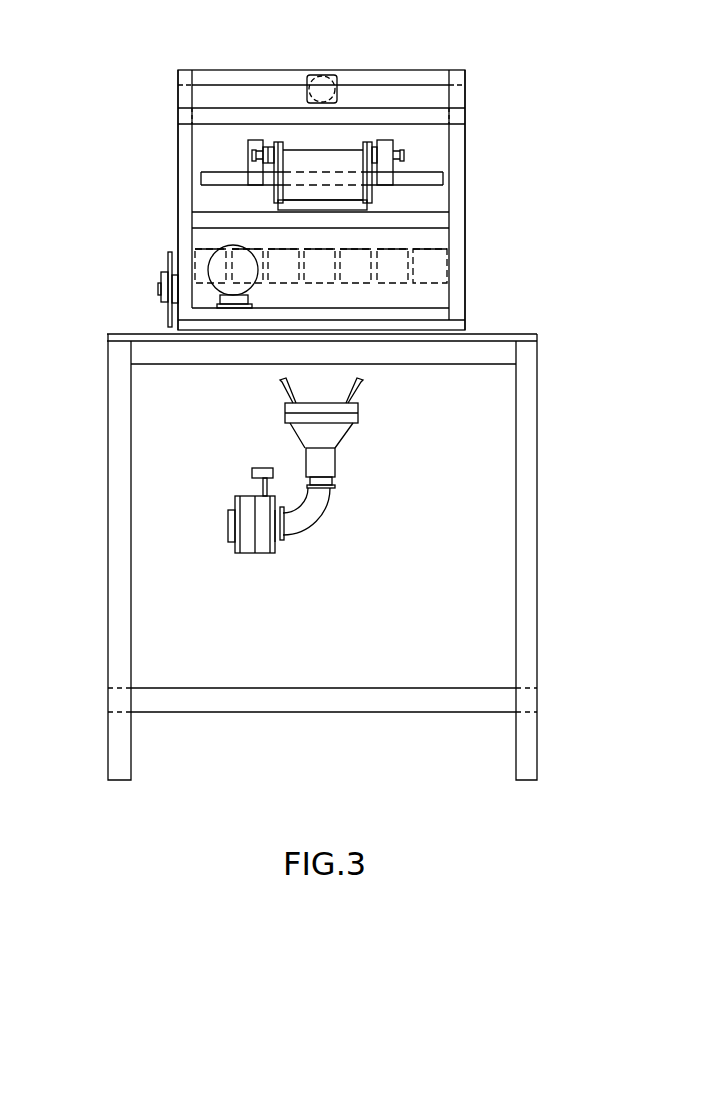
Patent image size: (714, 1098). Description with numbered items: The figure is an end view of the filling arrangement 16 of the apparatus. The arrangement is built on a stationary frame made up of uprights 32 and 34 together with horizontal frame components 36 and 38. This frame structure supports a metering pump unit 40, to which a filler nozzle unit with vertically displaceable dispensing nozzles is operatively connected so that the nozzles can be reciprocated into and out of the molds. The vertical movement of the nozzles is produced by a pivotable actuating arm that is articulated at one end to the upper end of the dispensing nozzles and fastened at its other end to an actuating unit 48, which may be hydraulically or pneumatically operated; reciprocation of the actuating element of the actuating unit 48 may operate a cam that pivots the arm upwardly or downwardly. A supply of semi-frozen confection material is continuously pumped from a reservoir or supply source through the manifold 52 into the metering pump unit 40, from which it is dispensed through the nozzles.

The filling arrangement 16 is at (348, 63).
The uprights 32 is at (108, 642).
The uprights 34 is at (178, 172).
The horizontal frame components 36 is at (443, 364).
The horizontal frame components 38 is at (207, 107).
The metering pump unit 40 is at (207, 250).
The actuating unit 48 is at (367, 205).
The manifold 52 is at (258, 553).